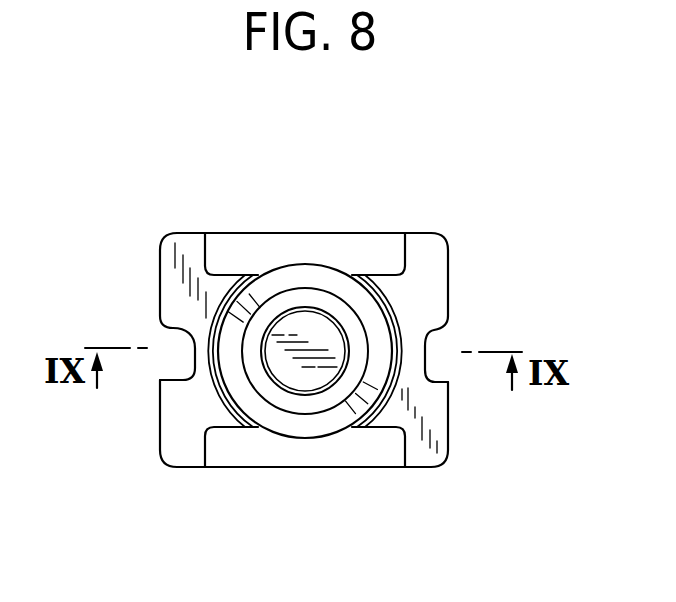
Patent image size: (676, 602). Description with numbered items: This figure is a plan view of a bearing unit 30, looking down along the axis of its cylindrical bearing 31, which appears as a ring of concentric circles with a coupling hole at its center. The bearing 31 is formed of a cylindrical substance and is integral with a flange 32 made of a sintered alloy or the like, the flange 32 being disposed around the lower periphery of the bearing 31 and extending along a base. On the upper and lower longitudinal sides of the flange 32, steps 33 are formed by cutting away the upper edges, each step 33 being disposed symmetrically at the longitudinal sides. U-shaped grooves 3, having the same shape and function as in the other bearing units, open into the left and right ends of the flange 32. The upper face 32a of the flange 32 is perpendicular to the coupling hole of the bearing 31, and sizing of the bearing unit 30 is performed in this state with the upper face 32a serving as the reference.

The bearing unit 30 is at (376, 198).
The cylindrical bearing 31 is at (330, 437).
The flange 32 is at (431, 240).
The upper face 32a is at (449, 258).
The step 33 is at (262, 244).
The U-shaped groove 3 is at (163, 333).